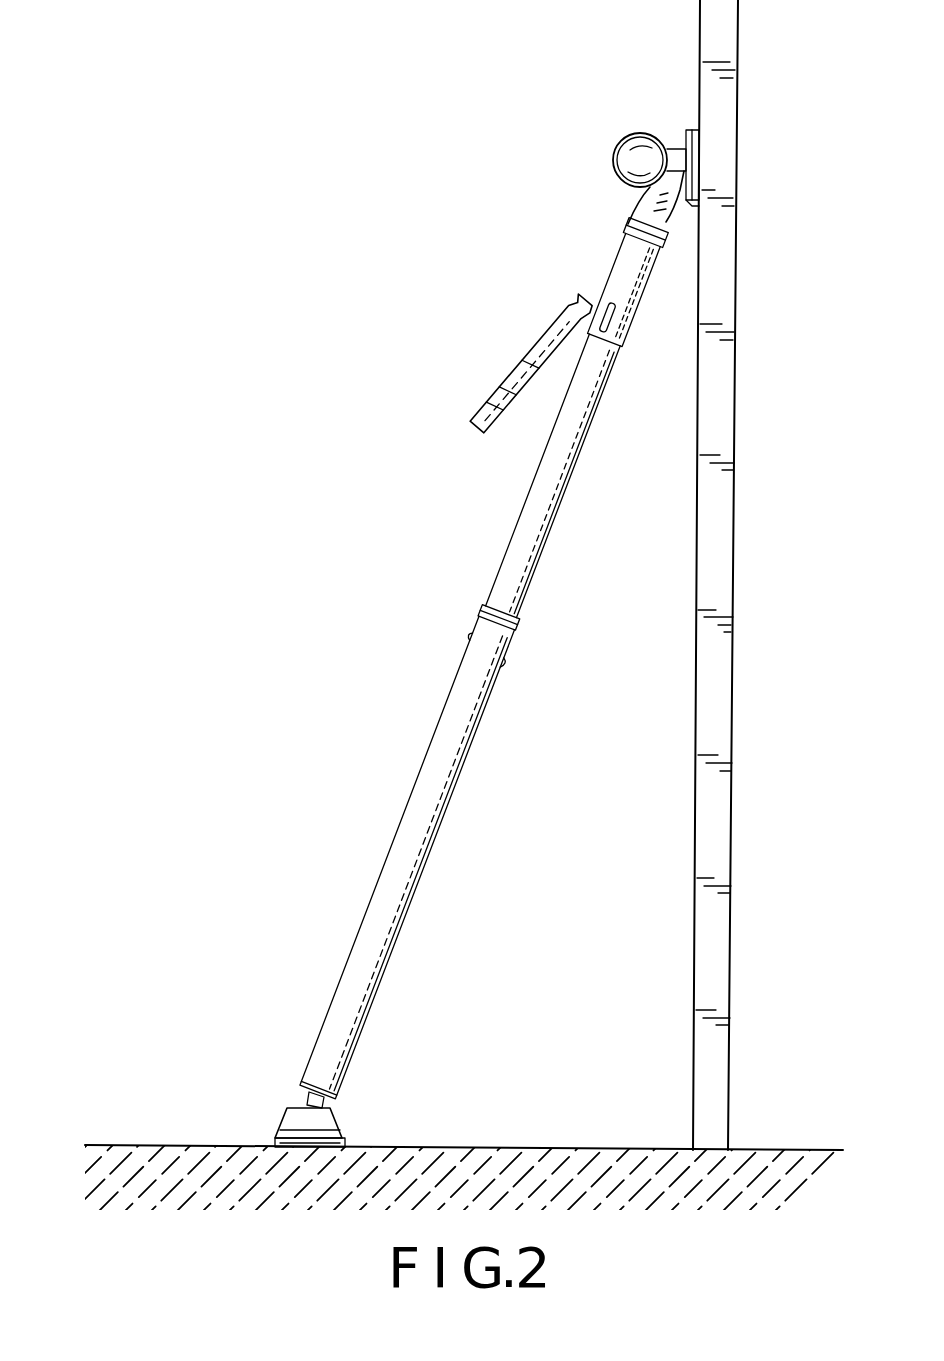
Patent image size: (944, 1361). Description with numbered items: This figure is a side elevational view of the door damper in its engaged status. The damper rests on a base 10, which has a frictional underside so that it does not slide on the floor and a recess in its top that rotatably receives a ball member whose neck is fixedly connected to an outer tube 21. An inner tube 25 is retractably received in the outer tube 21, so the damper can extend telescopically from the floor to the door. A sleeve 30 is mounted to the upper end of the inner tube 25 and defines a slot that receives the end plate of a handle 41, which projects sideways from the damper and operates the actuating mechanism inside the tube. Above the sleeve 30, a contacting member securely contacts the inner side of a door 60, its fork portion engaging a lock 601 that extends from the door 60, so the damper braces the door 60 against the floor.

The base 10 is at (292, 1108).
The outer tube 21 is at (443, 733).
The inner tube 25 is at (527, 520).
The sleeve 30 is at (612, 272).
The handle 41 is at (495, 395).
The door 60 is at (720, 548).
The lock 601 is at (623, 157).